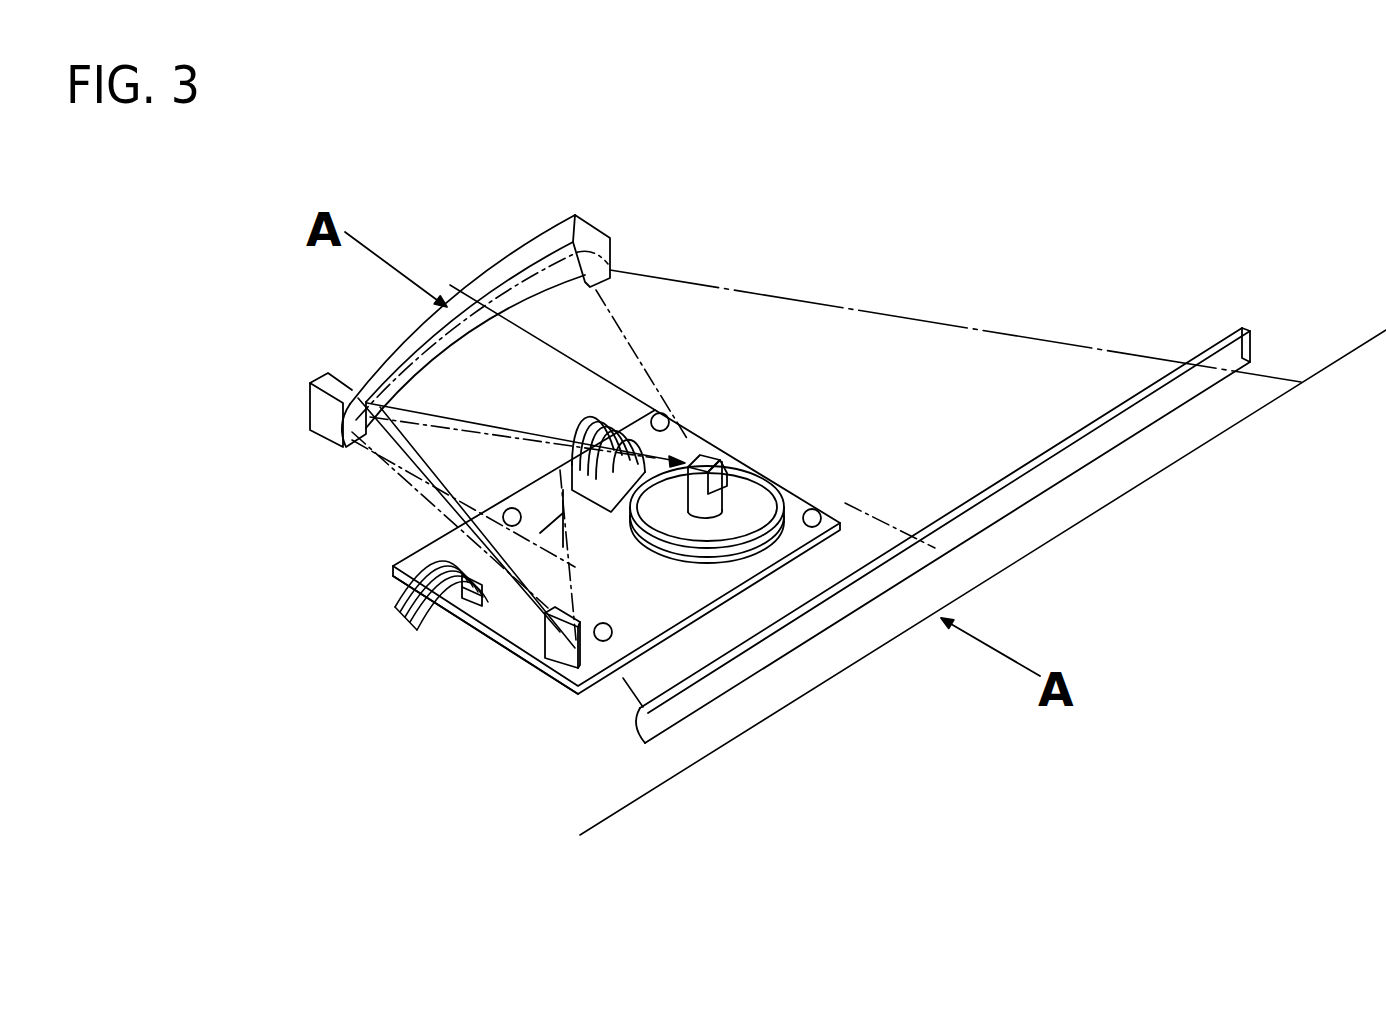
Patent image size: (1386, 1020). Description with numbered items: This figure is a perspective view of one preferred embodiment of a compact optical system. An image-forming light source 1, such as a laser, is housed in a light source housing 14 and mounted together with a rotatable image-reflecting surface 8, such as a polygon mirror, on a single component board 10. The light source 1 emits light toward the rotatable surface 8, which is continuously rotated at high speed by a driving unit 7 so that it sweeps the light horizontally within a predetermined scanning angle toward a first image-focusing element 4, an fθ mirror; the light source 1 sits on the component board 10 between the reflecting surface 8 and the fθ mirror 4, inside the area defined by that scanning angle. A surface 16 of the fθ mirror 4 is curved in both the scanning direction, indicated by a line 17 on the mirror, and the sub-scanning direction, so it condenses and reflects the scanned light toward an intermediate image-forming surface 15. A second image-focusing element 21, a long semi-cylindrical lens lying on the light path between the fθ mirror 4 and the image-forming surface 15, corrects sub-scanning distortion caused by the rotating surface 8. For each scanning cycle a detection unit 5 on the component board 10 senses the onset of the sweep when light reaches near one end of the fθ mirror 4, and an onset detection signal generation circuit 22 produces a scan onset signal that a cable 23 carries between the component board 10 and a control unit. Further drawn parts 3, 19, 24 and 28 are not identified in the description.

The image-forming light source 1 is at (633, 398).
The mirror 3 is at (758, 461).
The first image-focusing element 4 is at (546, 250).
The detection unit 5 is at (551, 665).
The driving unit 7 is at (763, 507).
The rotatable image-reflecting surface 8 is at (722, 452).
The component board 10 is at (420, 567).
The light source housing 14 is at (609, 413).
The intermediate image-forming surface 15 is at (1170, 470).
The surface of the fθ mirror 16 is at (583, 250).
The line 17 is at (491, 303).
The base plate 19 is at (590, 686).
The second image-focusing element 21 is at (1210, 348).
The onset detection signal generation circuit 22 is at (496, 634).
The cable 23 is at (582, 508).
The connector 24 is at (452, 612).
The mounting holes 28 is at (511, 510).